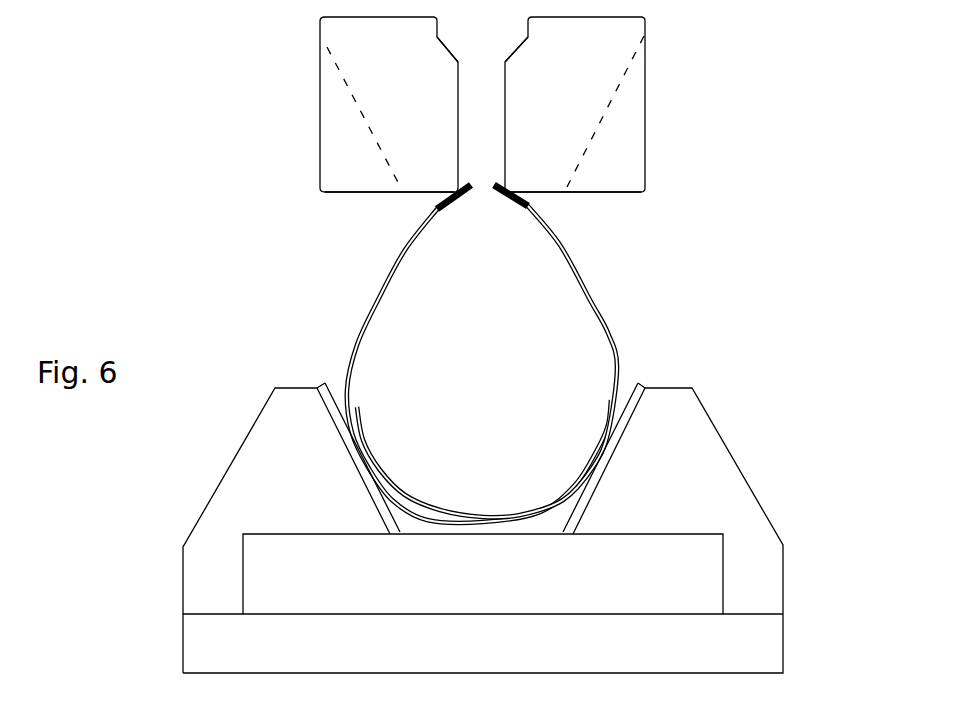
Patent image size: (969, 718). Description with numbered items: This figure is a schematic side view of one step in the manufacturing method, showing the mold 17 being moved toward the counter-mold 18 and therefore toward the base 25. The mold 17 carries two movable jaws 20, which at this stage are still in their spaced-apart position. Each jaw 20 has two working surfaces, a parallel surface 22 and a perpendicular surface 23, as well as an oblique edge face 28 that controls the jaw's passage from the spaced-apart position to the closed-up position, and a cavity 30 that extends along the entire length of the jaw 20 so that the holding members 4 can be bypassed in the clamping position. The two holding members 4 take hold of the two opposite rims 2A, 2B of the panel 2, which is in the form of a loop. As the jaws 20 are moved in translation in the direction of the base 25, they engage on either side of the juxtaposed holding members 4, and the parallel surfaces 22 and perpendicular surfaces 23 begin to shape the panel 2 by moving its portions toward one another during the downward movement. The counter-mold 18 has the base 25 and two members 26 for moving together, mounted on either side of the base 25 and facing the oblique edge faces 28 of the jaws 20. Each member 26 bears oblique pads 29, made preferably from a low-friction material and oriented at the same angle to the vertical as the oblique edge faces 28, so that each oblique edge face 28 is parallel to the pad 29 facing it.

The panel 2 is at (498, 354).
The rim of the panel 2A is at (452, 209).
The rim of the panel 2B is at (512, 210).
The holding member 4 is at (443, 203).
The mold 17 is at (762, 112).
The counter-mold 18 is at (792, 566).
The jaw 20 is at (368, 32).
The parallel surface 22 is at (505, 122).
The perpendicular surface 23 is at (350, 192).
The base 25 is at (617, 547).
The member for moving together 26 is at (693, 427).
The oblique edge face 28 is at (362, 118).
The oblique pad 29 is at (332, 380).
The cavity 30 is at (427, 38).